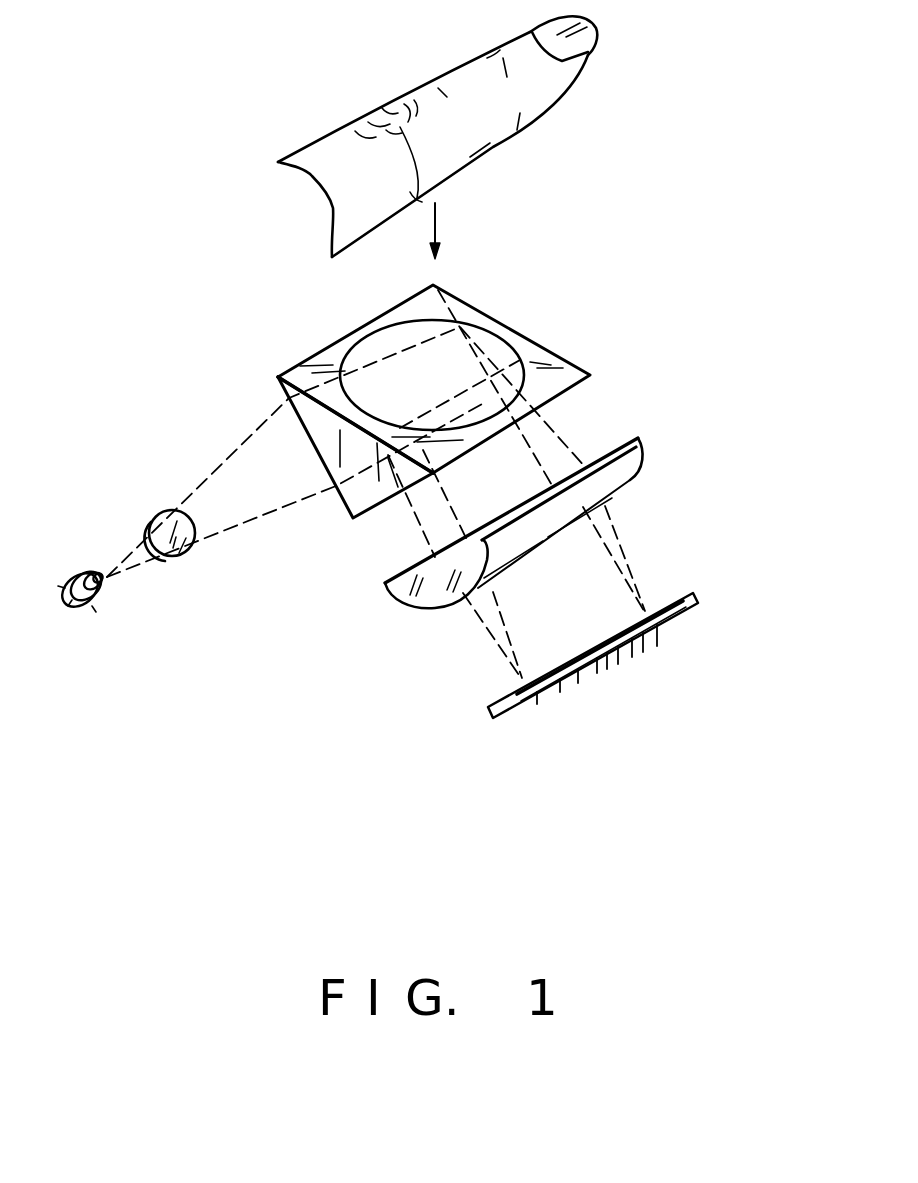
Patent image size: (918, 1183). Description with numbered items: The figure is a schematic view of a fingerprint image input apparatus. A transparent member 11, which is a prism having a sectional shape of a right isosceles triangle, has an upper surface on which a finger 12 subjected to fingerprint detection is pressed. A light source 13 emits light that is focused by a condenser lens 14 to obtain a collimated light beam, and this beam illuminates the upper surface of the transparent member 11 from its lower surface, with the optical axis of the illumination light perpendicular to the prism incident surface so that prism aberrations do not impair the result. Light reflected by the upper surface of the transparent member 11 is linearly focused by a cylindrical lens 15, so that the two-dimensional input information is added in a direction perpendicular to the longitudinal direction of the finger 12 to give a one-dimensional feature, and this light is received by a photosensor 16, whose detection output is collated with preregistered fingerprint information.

The transparent member 11 is at (575, 366).
The finger 12 is at (568, 78).
The light source 13 is at (90, 607).
The condenser lens 14 is at (160, 514).
The cylindrical lens 15 is at (632, 455).
The photosensor 16 is at (696, 606).